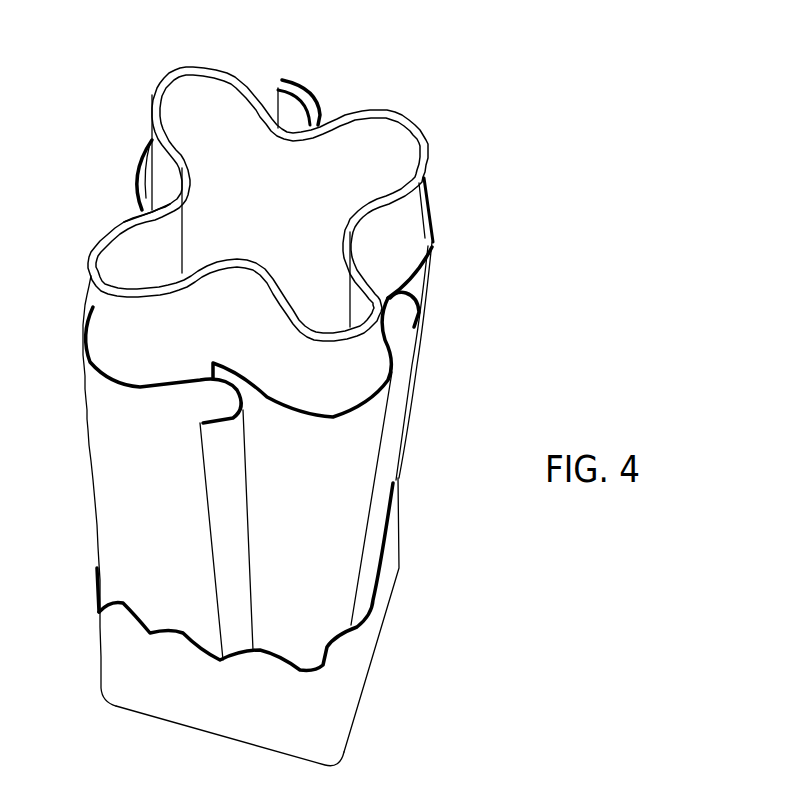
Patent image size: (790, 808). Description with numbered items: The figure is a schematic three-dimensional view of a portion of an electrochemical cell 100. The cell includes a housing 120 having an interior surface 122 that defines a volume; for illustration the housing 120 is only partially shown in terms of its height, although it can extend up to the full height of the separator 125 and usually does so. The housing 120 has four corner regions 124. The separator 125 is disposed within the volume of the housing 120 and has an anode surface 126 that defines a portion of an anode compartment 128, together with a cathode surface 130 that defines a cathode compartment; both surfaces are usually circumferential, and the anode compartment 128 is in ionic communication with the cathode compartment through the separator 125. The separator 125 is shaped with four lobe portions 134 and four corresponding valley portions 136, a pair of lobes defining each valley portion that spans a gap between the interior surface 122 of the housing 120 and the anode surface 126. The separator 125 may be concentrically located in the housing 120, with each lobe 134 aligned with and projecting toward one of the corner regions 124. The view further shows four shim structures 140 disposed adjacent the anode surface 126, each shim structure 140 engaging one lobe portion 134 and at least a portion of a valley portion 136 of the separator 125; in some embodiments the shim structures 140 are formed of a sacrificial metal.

The electrochemical cell 100 is at (436, 48).
The housing 120 is at (200, 717).
The interior surface 122 is at (158, 615).
The corner regions 124 is at (107, 647).
The separator 125 is at (155, 103).
The anode surface 126 is at (127, 233).
The anode compartment 128 is at (318, 244).
The cathode surface 130 is at (403, 210).
The lobe portions 134 is at (188, 67).
The valley portions 136 is at (353, 213).
The shim structures 140 is at (128, 521).